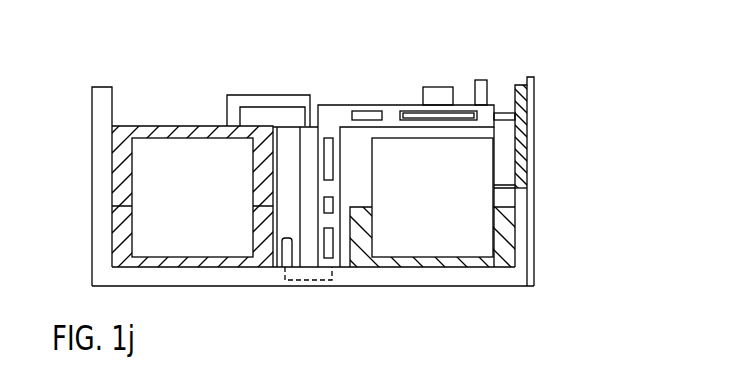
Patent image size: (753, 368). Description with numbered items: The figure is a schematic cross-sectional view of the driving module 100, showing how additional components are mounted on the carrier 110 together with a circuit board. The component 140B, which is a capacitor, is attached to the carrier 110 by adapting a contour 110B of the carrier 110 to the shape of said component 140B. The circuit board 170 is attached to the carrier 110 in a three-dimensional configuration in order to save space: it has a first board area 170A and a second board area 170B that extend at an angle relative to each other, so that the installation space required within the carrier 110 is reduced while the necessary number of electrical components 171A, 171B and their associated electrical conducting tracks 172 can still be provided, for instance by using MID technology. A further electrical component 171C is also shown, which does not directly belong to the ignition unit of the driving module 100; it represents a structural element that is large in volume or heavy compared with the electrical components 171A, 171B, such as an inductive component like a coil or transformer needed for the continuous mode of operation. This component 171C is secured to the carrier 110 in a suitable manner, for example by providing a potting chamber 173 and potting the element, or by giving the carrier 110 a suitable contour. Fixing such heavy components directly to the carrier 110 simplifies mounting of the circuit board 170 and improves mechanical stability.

The driving module 100 is at (570, 73).
The carrier 110 is at (537, 252).
The contour 110B is at (507, 260).
The component 140B is at (450, 217).
The circuit board 170 is at (393, 101).
The first board area 170A is at (348, 104).
The second board area 170B is at (313, 125).
The electrical component 171A is at (440, 87).
The electrical component 171B is at (486, 76).
The further electrical component 171C is at (215, 217).
The electrical conducting tracks 172 is at (497, 127).
The potting chamber 173 is at (232, 186).